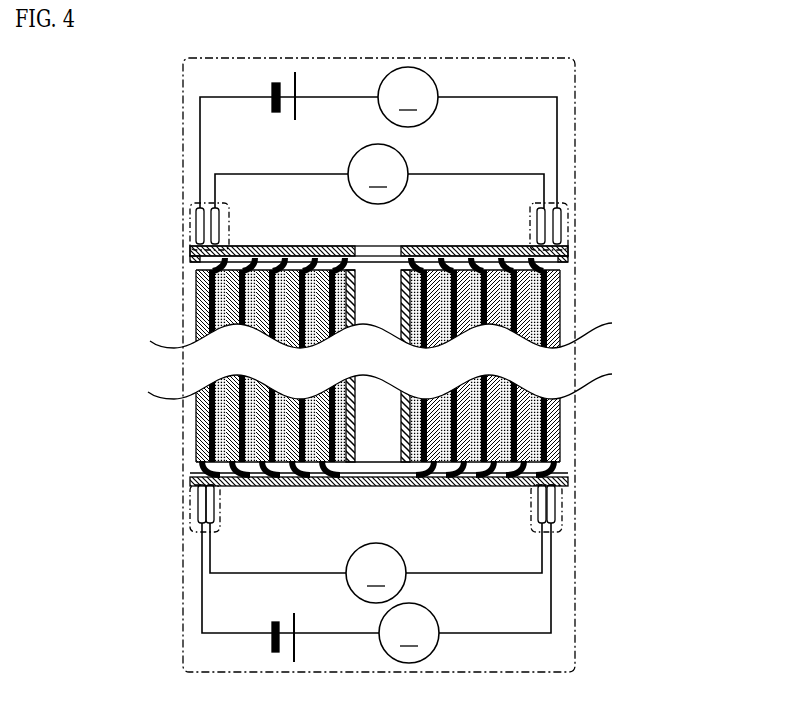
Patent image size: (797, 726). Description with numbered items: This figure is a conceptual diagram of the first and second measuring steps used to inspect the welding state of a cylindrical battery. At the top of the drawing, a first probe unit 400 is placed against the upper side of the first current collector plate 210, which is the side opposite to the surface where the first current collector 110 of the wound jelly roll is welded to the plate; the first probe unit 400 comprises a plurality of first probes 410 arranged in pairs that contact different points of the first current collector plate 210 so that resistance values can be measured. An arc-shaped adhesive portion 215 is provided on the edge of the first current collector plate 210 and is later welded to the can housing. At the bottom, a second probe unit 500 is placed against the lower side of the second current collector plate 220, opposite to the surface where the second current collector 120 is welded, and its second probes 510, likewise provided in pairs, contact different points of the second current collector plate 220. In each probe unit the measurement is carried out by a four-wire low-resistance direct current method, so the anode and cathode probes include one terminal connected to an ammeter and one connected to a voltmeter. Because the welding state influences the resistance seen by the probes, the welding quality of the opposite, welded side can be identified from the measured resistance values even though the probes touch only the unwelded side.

The first probe unit 400 is at (181, 98).
The first probes 410 is at (188, 207).
The first current collector plate 210 is at (264, 247).
The adhesive portion 215 is at (190, 250).
The first current collector 110 is at (560, 267).
The second current collector 120 is at (562, 472).
The second current collector plate 220 is at (492, 488).
The second probes 510 is at (190, 505).
The second probe unit 500 is at (182, 588).